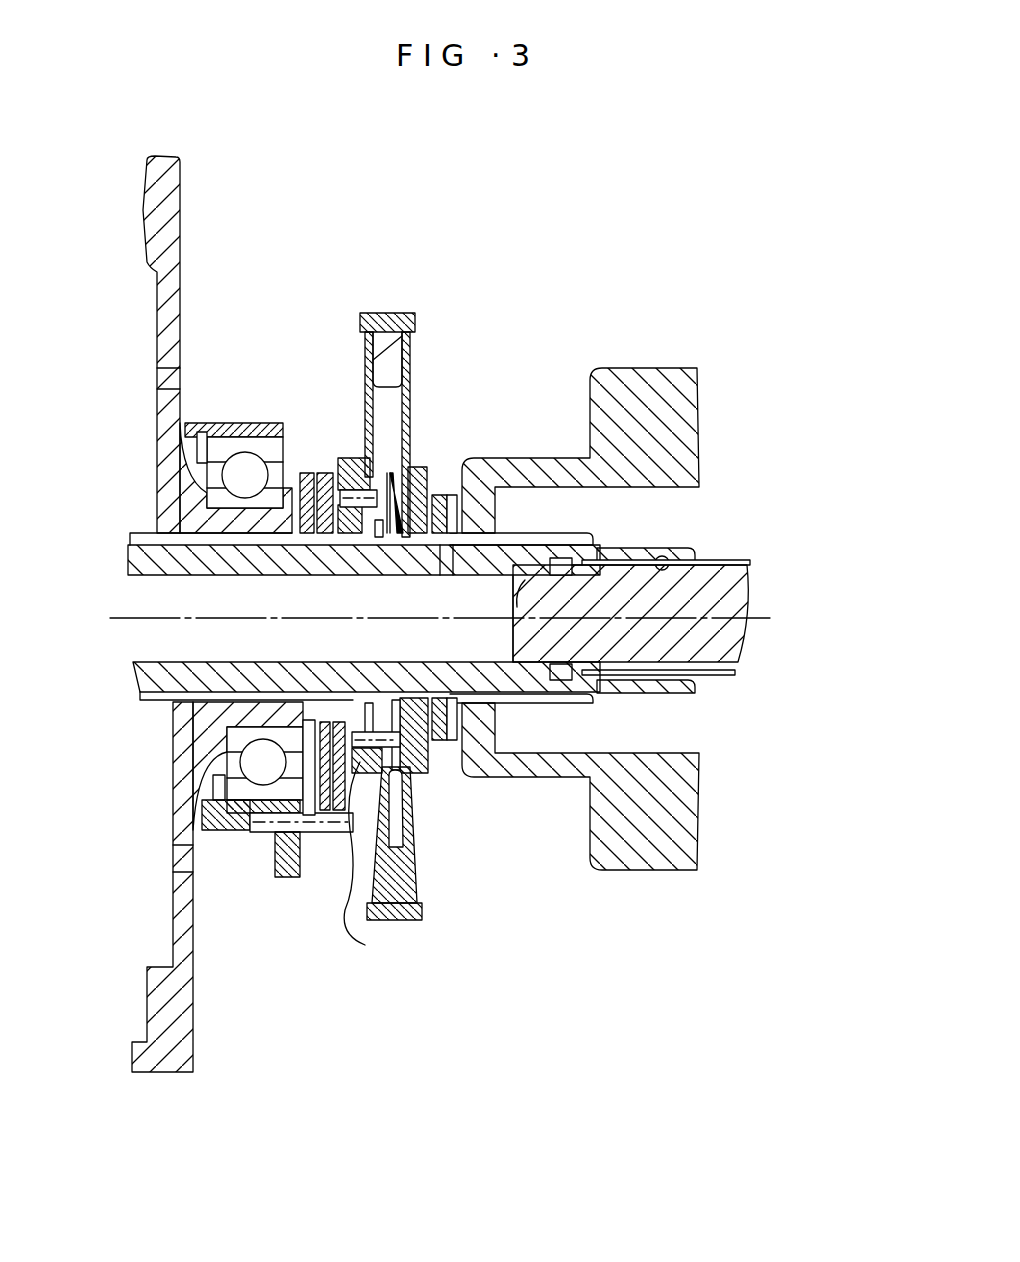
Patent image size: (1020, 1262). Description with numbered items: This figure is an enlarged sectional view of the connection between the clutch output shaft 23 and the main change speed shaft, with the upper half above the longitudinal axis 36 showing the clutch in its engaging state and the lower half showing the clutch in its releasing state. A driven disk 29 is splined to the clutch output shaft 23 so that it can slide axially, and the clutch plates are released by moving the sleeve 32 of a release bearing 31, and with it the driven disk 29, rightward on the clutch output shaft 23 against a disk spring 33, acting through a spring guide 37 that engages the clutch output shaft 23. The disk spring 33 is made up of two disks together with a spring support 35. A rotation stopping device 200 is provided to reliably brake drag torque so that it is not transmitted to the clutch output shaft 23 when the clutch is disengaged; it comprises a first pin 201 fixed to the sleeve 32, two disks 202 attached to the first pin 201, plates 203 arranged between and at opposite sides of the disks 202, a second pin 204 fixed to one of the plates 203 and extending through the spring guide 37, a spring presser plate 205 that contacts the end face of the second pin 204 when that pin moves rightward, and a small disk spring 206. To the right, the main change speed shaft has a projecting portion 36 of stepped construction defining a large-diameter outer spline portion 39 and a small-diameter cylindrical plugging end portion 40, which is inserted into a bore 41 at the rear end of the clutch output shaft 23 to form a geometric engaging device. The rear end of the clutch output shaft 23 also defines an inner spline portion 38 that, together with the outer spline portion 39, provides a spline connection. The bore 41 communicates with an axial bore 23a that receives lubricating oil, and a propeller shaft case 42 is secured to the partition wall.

The clutch output shaft 23 is at (172, 682).
The axial bore 23a is at (243, 595).
The driven disk 29 is at (183, 1075).
The release bearing 31 is at (238, 788).
The sleeve 32 is at (283, 878).
The disk spring 33 is at (360, 350).
The spring support 35 is at (397, 320).
The longitudinal axis / projecting portion 36 is at (350, 618).
The spring guide 37 is at (352, 458).
The inner spline portion 38 is at (662, 552).
The outer spline portion 39 is at (730, 560).
The plugging end portion 40 is at (513, 610).
The bore 41 is at (500, 573).
The propeller shaft case 42 is at (655, 868).
The rotation stopping device 200 is at (306, 895).
The first pin 201 is at (322, 835).
The disks 202 is at (378, 873).
The plates 203 is at (410, 820).
The second pin 204 is at (405, 755).
The spring presser plate 205 is at (395, 450).
The small disk spring 206 is at (412, 462).